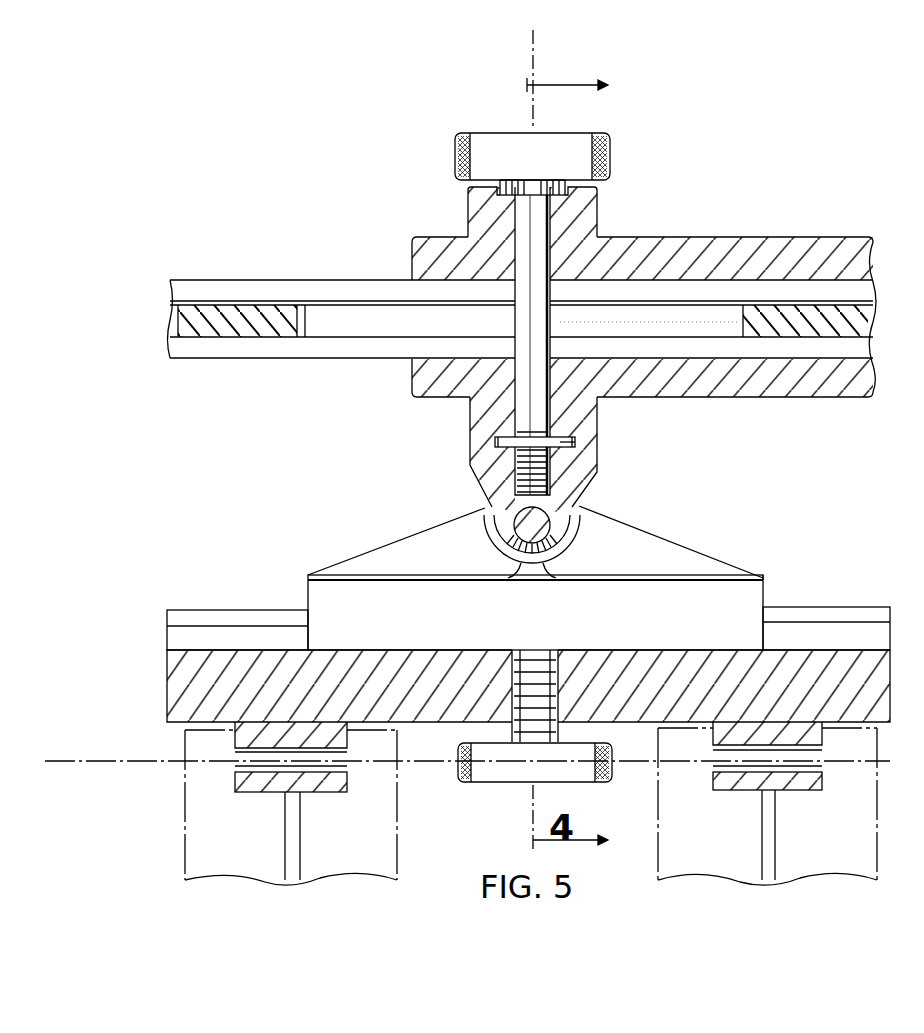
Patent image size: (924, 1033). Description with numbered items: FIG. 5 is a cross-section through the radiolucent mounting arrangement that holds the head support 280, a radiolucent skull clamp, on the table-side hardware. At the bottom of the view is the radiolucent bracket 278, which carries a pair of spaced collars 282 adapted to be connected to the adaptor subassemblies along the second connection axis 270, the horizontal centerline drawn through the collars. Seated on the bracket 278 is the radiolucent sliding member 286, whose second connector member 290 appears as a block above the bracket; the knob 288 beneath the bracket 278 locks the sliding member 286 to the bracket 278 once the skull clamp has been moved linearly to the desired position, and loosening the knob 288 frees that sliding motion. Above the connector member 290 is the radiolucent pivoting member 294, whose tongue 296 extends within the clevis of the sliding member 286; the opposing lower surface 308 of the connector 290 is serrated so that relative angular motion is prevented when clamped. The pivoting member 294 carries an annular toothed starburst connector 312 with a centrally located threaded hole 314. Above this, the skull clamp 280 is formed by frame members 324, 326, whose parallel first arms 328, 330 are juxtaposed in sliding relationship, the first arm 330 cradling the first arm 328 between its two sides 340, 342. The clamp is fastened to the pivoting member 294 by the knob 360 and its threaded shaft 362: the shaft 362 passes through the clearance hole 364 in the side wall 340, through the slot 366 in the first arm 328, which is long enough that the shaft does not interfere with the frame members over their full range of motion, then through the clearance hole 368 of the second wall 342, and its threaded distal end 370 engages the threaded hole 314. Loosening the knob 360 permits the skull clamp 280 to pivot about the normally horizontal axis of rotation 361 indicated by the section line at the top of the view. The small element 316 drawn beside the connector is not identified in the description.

The second connection axis 270 is at (103, 763).
The radiolucent bracket 278 is at (150, 685).
The radiolucent skull clamp 280 is at (722, 155).
The spaced collars 282 is at (322, 782).
The radiolucent sliding member 286 is at (775, 570).
The knob 288 is at (486, 772).
The second radiolucent connector member 290 is at (355, 560).
The radiolucent pivoting member 294 is at (592, 468).
The tongue 296 is at (505, 540).
The lower surface 308 is at (548, 536).
The starburst connector 312 is at (488, 441).
The threaded hole 314 is at (492, 478).
The pin slot 316 is at (588, 437).
The frame member 324 is at (192, 370).
The frame member 326 is at (745, 405).
The first arm 328 is at (296, 359).
The first arm 330 is at (830, 397).
The side wall 340 is at (606, 238).
The second wall 342 is at (612, 397).
The knob 360 is at (580, 148).
The axis of rotation 361 is at (540, 55).
The threaded shaft 362 is at (490, 223).
The clearance hole 364 is at (527, 242).
The slot 366 is at (695, 320).
The clearance hole 368 is at (494, 372).
The threaded distal end 370 is at (520, 458).